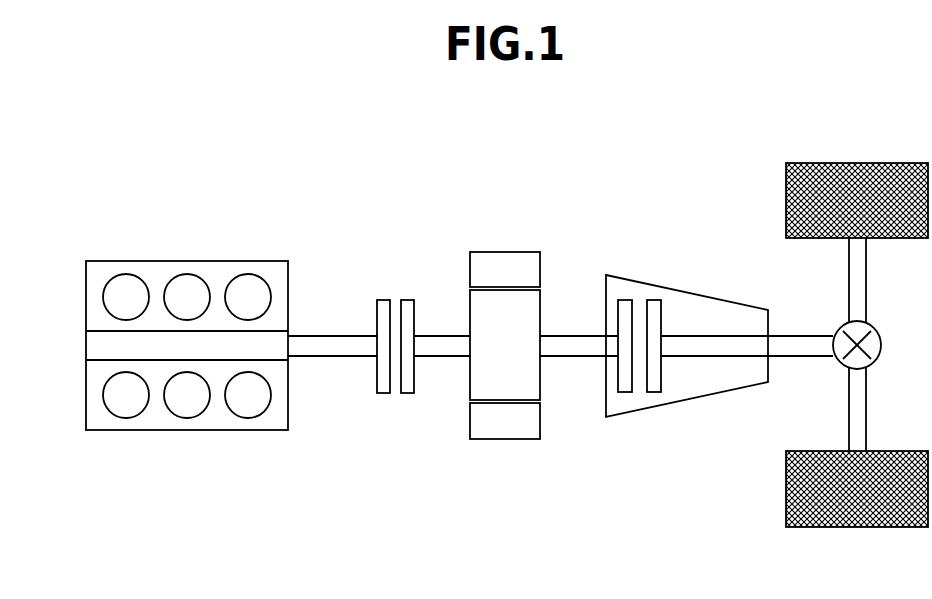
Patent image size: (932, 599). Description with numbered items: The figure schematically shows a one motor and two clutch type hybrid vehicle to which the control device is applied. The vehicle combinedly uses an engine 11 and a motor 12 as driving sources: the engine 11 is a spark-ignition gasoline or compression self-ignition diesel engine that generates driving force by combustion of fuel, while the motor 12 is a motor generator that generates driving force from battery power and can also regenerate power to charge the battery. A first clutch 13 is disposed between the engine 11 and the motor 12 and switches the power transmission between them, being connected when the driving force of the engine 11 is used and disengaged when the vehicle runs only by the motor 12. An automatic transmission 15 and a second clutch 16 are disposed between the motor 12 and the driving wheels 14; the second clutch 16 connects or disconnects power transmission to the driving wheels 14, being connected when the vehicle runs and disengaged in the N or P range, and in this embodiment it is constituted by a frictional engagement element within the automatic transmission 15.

The engine 11 is at (194, 260).
The motor 12 is at (505, 252).
The first clutch 13 is at (376, 318).
The driving wheels 14 is at (857, 162).
The automatic transmission 15 is at (707, 397).
The second clutch 16 is at (623, 392).